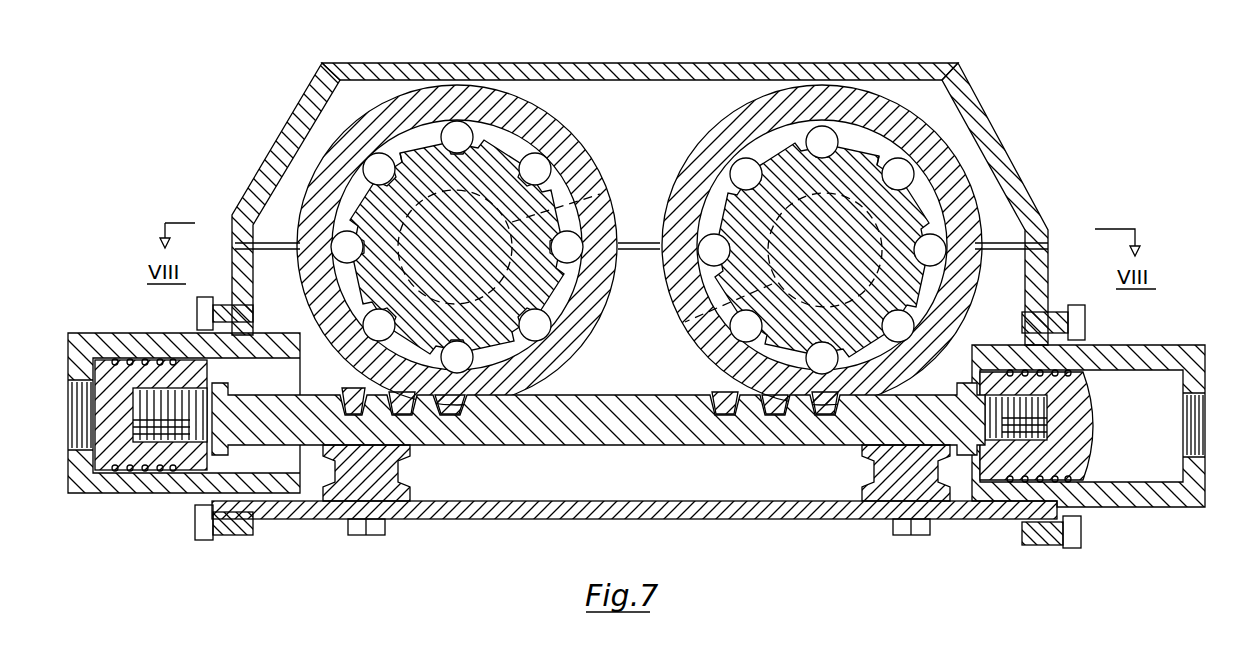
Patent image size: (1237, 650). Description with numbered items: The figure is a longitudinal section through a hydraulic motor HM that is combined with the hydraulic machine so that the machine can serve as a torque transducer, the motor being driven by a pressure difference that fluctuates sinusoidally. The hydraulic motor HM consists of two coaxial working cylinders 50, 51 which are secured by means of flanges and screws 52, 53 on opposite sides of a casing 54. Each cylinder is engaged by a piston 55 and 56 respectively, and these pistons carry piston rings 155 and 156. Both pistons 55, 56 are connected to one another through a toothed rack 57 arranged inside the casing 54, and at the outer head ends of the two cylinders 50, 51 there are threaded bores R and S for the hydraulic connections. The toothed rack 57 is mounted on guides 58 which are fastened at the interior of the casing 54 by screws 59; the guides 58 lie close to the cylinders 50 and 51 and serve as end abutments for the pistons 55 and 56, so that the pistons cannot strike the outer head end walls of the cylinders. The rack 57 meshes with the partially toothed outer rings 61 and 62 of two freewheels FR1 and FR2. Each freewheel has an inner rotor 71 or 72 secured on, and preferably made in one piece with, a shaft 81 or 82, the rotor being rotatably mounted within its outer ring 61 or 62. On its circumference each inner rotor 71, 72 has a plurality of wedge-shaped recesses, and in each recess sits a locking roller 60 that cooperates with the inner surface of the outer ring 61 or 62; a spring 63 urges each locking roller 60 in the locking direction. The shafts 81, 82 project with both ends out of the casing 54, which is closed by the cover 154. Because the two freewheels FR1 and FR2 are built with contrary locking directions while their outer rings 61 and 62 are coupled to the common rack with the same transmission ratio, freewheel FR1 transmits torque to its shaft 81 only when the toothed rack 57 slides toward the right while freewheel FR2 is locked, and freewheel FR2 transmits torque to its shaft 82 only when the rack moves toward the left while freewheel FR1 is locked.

The working cylinder 50 is at (90, 332).
The working cylinder 51 is at (1152, 507).
The screws 52 is at (206, 538).
The screws 53 is at (1078, 540).
The casing 54 is at (720, 519).
The piston 55 is at (120, 372).
The piston 56 is at (1090, 416).
The toothed rack 57 is at (615, 445).
The guides 58 is at (404, 452).
The screws 59 is at (376, 536).
The locking roller 60 is at (378, 168).
The outer ring 61 is at (304, 285).
The outer ring 62 is at (968, 288).
The spring 63 is at (400, 150).
The inner rotor 71 is at (505, 166).
The inner rotor 72 is at (762, 160).
The shaft 81 is at (603, 191).
The shaft 82 is at (682, 325).
The cover 154 is at (653, 68).
The piston rings 155 is at (142, 476).
The piston rings 156 is at (1006, 486).
The freewheel FR1 is at (454, 222).
The freewheel FR2 is at (826, 222).
The hydraulic motor HM is at (975, 96).
The threaded bore R is at (80, 486).
The threaded bore S is at (1200, 345).